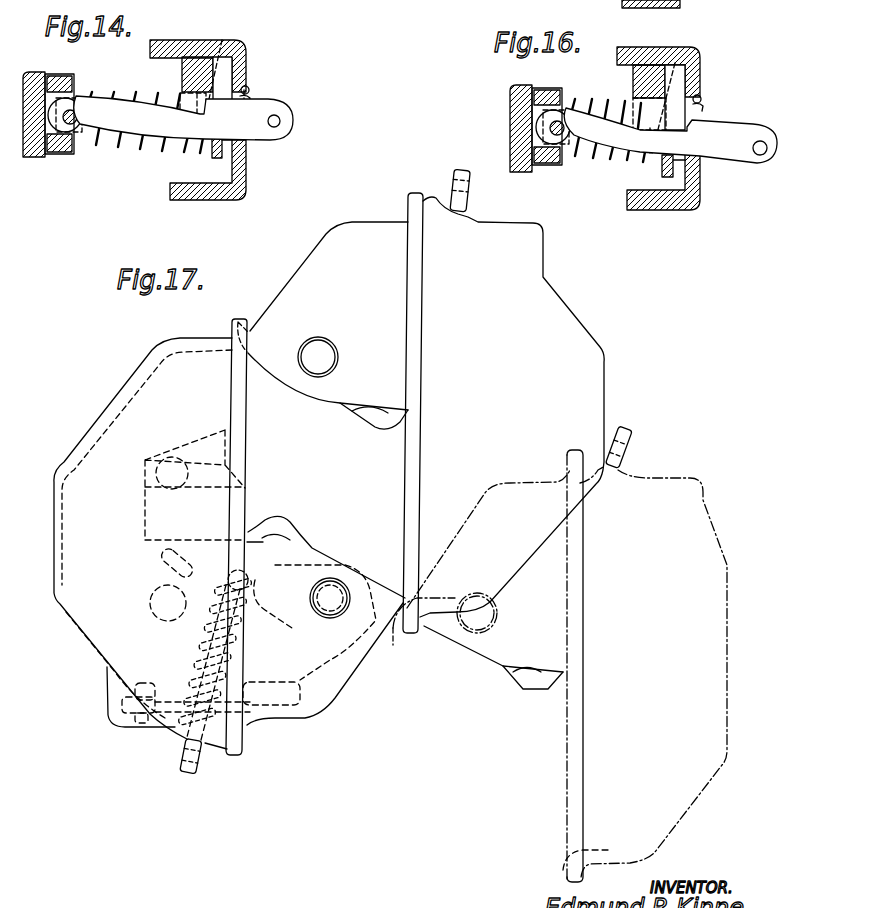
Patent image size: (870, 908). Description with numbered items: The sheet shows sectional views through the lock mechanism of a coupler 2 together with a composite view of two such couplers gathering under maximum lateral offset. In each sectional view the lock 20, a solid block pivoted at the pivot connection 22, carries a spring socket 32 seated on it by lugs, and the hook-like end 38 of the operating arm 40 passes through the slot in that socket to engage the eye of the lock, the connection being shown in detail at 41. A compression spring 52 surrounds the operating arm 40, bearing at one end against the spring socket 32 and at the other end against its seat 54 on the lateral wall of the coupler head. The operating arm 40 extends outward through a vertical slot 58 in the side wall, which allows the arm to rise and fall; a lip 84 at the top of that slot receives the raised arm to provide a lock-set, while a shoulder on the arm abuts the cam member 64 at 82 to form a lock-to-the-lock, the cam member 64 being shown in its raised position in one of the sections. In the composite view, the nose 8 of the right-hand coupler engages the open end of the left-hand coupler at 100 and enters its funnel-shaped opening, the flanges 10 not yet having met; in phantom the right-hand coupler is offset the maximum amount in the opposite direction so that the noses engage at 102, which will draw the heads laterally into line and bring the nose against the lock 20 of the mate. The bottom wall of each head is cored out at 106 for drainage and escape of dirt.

In FIG. 17, the coupler 2 is at (125, 383).
In FIG. 17, the nose 8 is at (284, 300).
In FIG. 17, the flange 10 is at (418, 211).
In FIG. 14, the lock 20 is at (27, 76).
In FIG. 16, the lock 20 is at (522, 104).
In FIG. 17, the lock 20 is at (364, 427).
In FIG. 17, the pivot connection 22 is at (318, 356).
In FIG. 14, the spring socket 32 is at (57, 76).
In FIG. 16, the spring socket 32 is at (547, 91).
In FIG. 14, the hook-like end 38 is at (60, 140).
In FIG. 16, the hook-like end 38 is at (551, 145).
In FIG. 14, the operating arm 40 is at (145, 124).
In FIG. 16, the operating arm 40 is at (627, 138).
In FIG. 17, the operating arm 40 is at (181, 757).
In FIG. 14, the connection of operating arm to lock 41 is at (75, 98).
In FIG. 16, the connection of operating arm to lock 41 is at (548, 128).
In FIG. 14, the compression spring 52 is at (107, 100).
In FIG. 16, the compression spring 52 is at (582, 100).
In FIG. 17, the compression spring 52 is at (200, 662).
In FIG. 14, the spring seat 54 is at (221, 40).
In FIG. 16, the spring seat 54 is at (678, 47).
In FIG. 14, the vertical slot 58 is at (250, 99).
In FIG. 16, the vertical slot 58 is at (704, 106).
In FIG. 14, the cam member 64 is at (224, 150).
In FIG. 16, the cam member 64 is at (674, 170).
In FIG. 14, the lock-to-the-lock abutment 82 is at (250, 120).
In FIG. 14, the lip 84 is at (249, 90).
In FIG. 16, the lip 84 is at (699, 96).
In FIG. 17, the nose engagement point 100 is at (241, 318).
In FIG. 17, the nose-to-nose engagement point 102 is at (399, 648).
In FIG. 17, the cored-out drainage opening 106 is at (149, 478).